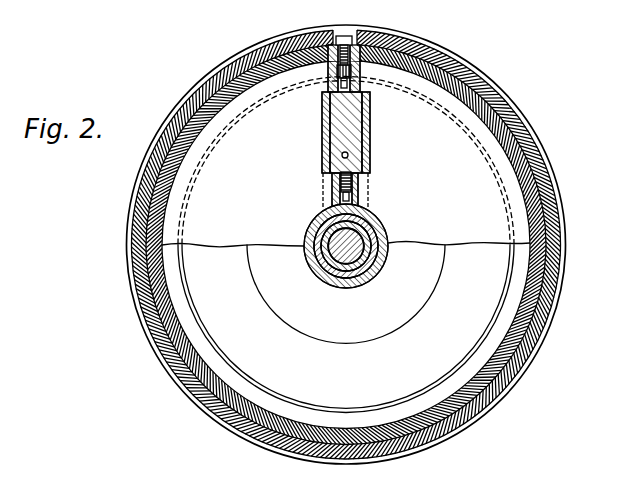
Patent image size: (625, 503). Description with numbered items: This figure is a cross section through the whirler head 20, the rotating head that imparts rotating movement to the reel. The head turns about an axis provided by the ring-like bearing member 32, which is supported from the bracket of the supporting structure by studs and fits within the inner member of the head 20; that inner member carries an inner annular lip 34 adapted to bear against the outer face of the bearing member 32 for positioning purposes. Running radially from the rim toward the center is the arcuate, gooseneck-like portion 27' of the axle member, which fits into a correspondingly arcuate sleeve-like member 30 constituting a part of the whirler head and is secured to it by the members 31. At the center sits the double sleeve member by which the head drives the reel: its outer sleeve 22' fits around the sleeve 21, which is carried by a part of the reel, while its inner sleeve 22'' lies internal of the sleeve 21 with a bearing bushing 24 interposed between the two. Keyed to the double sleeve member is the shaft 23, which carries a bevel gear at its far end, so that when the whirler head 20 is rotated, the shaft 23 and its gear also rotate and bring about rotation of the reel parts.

The whirler head 20 is at (508, 96).
The sleeve 21 is at (372, 262).
The outer sleeve 22' is at (321, 255).
The inner sleeve 22'' is at (315, 238).
The shaft 23 is at (355, 237).
The bearing bushing 24 is at (335, 262).
The arcuate portion 27' is at (318, 118).
The arcuate sleeve-like member 30 is at (366, 134).
The securing members 31 is at (333, 63).
The ring-like bearing member 32 is at (495, 270).
The inner annular lip 34 is at (358, 415).